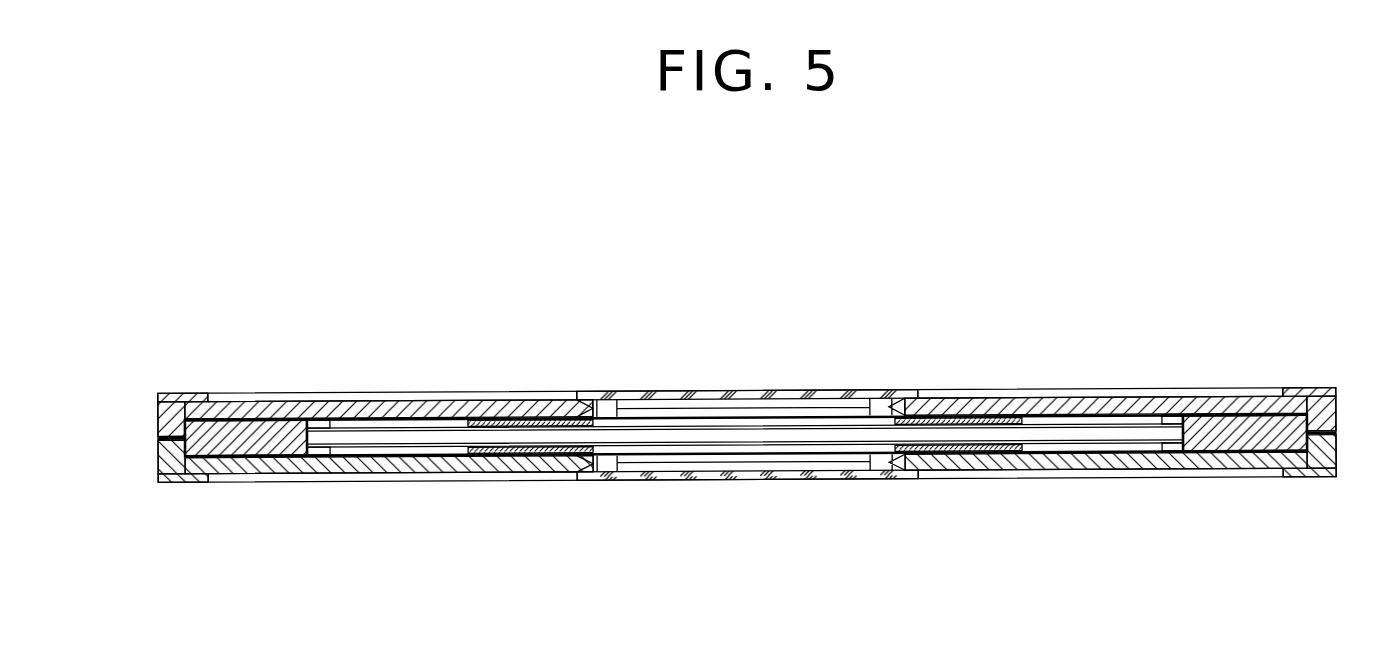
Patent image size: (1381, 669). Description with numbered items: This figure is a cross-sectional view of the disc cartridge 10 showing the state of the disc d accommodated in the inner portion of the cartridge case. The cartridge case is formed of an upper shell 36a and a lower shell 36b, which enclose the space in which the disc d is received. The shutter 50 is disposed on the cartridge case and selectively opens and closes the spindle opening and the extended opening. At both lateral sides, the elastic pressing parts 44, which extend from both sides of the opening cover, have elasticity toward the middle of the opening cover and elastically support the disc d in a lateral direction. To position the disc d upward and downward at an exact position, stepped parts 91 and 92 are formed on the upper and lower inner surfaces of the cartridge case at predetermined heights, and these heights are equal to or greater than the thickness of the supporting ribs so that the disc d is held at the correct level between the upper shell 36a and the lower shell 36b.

The housing 10 is at (1305, 388).
The upper shell 36a is at (158, 412).
The lower shell 36b is at (158, 461).
The elastic pressing part 44 is at (229, 442).
The shutter 50 is at (639, 391).
The stepped part 91 is at (497, 419).
The stepped part 92 is at (511, 453).
The disc d is at (965, 435).